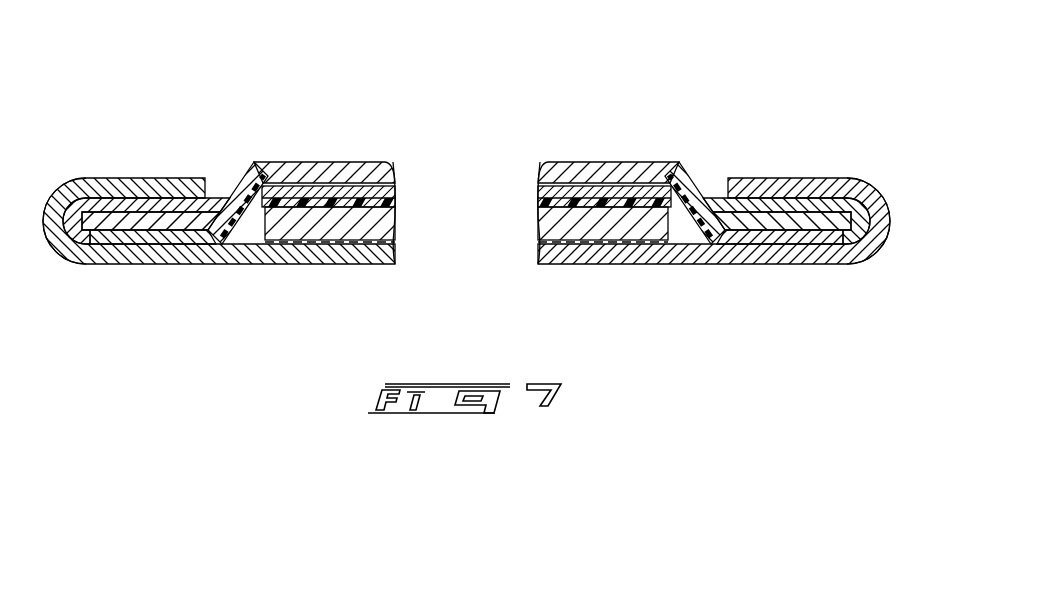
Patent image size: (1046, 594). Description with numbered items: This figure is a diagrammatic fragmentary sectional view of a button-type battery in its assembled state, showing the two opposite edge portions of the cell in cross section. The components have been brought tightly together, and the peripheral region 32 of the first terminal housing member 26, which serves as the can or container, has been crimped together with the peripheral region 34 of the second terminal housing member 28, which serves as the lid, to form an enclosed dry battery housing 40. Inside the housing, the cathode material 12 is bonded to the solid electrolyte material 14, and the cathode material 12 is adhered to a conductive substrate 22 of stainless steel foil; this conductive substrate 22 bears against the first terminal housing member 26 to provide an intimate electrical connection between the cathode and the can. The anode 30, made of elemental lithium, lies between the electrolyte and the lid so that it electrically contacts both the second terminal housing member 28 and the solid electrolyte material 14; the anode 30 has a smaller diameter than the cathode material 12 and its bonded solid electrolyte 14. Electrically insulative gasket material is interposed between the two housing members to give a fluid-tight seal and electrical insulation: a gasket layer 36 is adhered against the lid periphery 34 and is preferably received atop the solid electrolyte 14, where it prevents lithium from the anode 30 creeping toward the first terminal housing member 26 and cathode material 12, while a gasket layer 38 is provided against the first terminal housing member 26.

The cathode material 12 is at (536, 226).
The solid electrolyte material 14 is at (536, 204).
The conductive substrate 22 is at (536, 243).
The first terminal housing member 26 is at (137, 255).
The second terminal housing member 28 is at (238, 194).
The anode 30 is at (398, 186).
The peripheral region of first terminal housing member 32 is at (56, 272).
The peripheral region of second terminal housing member 34 is at (257, 121).
The gasket layer 36 is at (247, 232).
The gasket layer 38 is at (170, 237).
The dry battery housing 40 is at (642, 62).